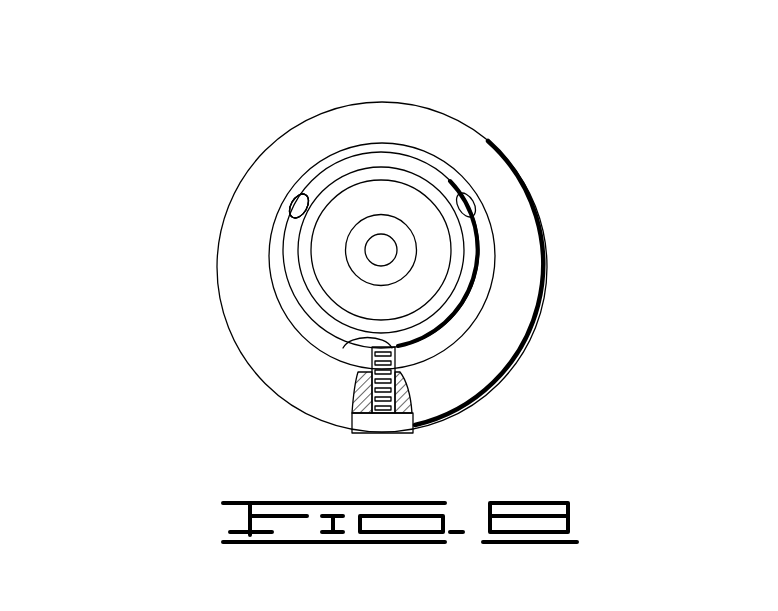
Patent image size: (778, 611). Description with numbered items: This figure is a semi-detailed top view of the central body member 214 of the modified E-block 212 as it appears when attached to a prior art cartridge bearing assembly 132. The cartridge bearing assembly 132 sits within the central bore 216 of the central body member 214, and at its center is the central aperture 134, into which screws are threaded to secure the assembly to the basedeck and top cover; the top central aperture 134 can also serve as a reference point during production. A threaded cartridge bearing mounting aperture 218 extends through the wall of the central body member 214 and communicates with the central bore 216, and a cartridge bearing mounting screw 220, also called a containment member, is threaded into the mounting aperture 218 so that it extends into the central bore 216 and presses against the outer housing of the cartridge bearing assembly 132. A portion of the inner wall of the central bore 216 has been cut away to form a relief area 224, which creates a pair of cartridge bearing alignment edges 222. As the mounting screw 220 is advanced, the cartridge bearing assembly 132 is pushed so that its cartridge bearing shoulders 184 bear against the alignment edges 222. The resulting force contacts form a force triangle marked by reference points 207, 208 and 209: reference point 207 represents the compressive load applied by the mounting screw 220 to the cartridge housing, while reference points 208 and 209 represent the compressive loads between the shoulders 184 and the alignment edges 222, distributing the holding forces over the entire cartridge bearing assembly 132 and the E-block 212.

The cartridge bearing assembly 132 is at (302, 259).
The central aperture 134 is at (474, 250).
The cartridge bearing shoulder 184 is at (211, 171).
The reference point 207 is at (294, 383).
The reference point 208 is at (449, 244).
The reference point 209 is at (275, 127).
The E-block 212 is at (394, 243).
The central body member 214 is at (281, 283).
The central bore 216 is at (444, 268).
The cartridge bearing mounting aperture 218 is at (434, 437).
The cartridge bearing mounting screw 220 is at (333, 401).
The cartridge bearing alignment edge 222 is at (380, 211).
The relief area 224 is at (487, 223).